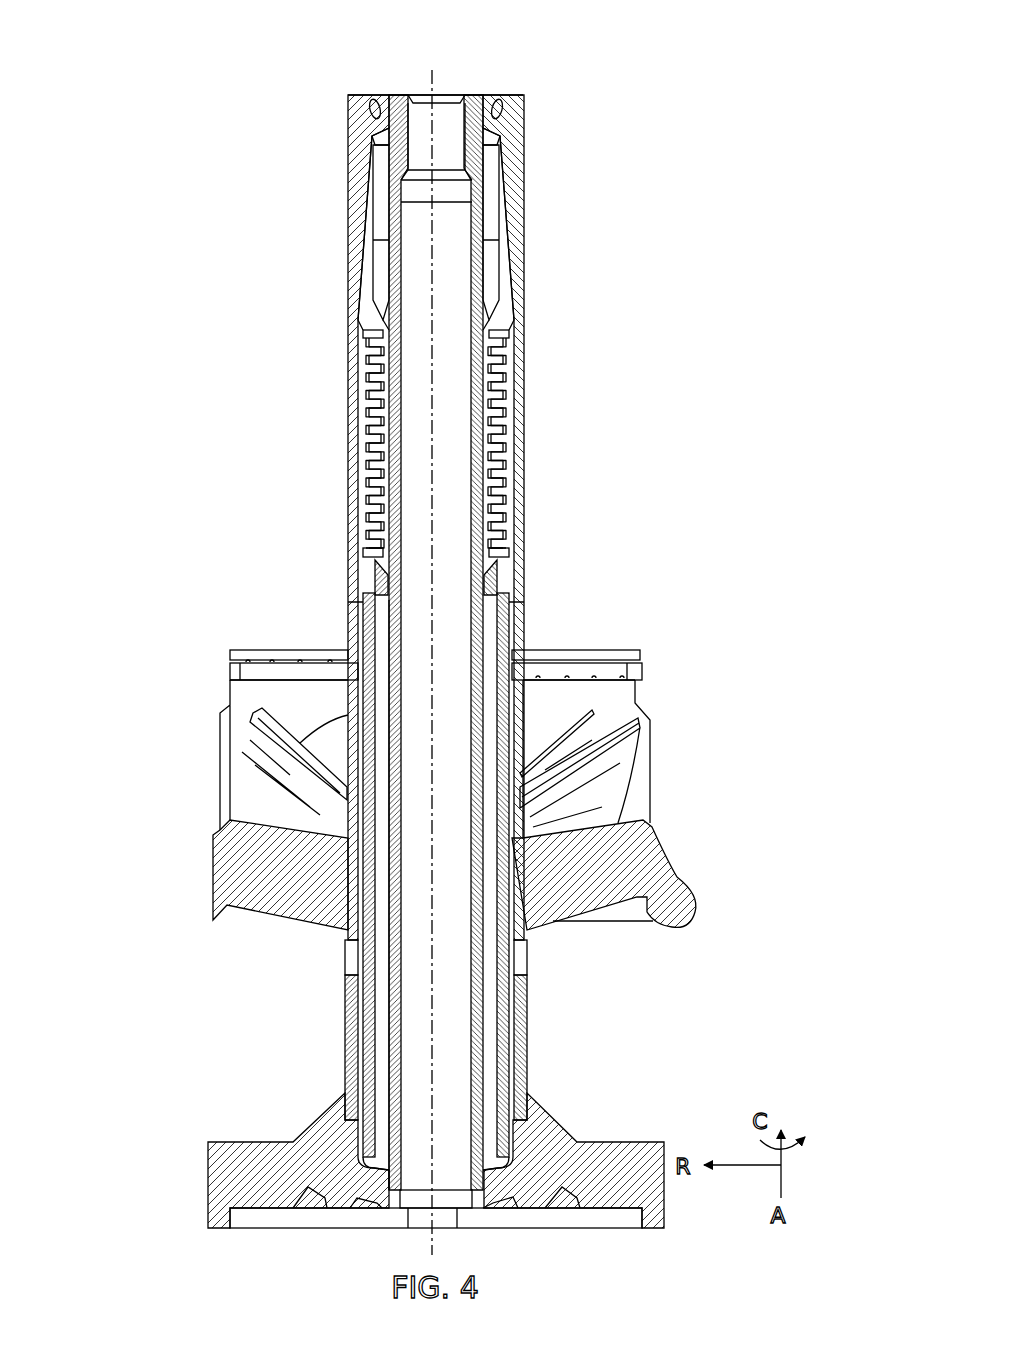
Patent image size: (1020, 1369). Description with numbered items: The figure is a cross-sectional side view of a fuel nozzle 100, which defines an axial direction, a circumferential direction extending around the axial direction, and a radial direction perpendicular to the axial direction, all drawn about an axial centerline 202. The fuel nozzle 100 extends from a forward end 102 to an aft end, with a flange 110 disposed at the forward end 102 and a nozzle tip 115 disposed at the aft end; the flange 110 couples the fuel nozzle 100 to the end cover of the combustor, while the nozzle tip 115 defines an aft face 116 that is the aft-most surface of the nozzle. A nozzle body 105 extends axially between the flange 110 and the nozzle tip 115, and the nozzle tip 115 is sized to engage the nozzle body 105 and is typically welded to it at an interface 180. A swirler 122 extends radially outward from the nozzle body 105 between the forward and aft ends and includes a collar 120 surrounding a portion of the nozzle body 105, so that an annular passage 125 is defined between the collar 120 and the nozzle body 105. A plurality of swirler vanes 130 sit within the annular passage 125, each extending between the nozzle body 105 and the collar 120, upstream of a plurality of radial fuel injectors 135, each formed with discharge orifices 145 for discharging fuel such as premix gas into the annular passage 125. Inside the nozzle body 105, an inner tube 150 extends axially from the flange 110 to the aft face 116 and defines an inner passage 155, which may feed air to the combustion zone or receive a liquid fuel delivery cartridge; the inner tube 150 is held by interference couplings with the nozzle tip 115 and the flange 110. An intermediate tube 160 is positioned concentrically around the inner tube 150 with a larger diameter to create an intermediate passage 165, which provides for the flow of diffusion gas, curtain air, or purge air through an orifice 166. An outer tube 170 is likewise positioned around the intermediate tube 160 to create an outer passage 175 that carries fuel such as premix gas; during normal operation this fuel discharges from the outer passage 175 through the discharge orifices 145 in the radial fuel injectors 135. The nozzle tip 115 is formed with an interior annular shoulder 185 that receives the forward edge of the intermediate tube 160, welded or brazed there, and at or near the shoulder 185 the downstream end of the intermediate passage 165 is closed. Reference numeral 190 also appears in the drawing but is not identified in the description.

The fuel nozzle 100 is at (100, 860).
The forward end 102 is at (560, 70).
The nozzle body 105 is at (523, 418).
The flange 110 is at (208, 1162).
The nozzle tip 115 is at (523, 118).
The aft face 116 is at (500, 96).
The collar 120 is at (218, 785).
The swirler 122 is at (140, 610).
The annular passage 125 is at (278, 700).
The swirler vanes 130 is at (245, 738).
The radial fuel injectors 135 is at (585, 668).
The discharge orifices 145 is at (335, 660).
The inner tube 150 is at (401, 1072).
The inner passage 155 is at (462, 1010).
The intermediate tube 160 is at (433, 982).
The intermediate passage 165 is at (393, 808).
The orifice 166 is at (378, 92).
The outer tube 170 is at (362, 505).
The outer passage 175 is at (355, 1047).
The interface 180 is at (348, 262).
The interior annular shoulder 185 is at (370, 128).
The upper housing portion 190 is at (348, 205).
The axial centerline 202 is at (432, 288).